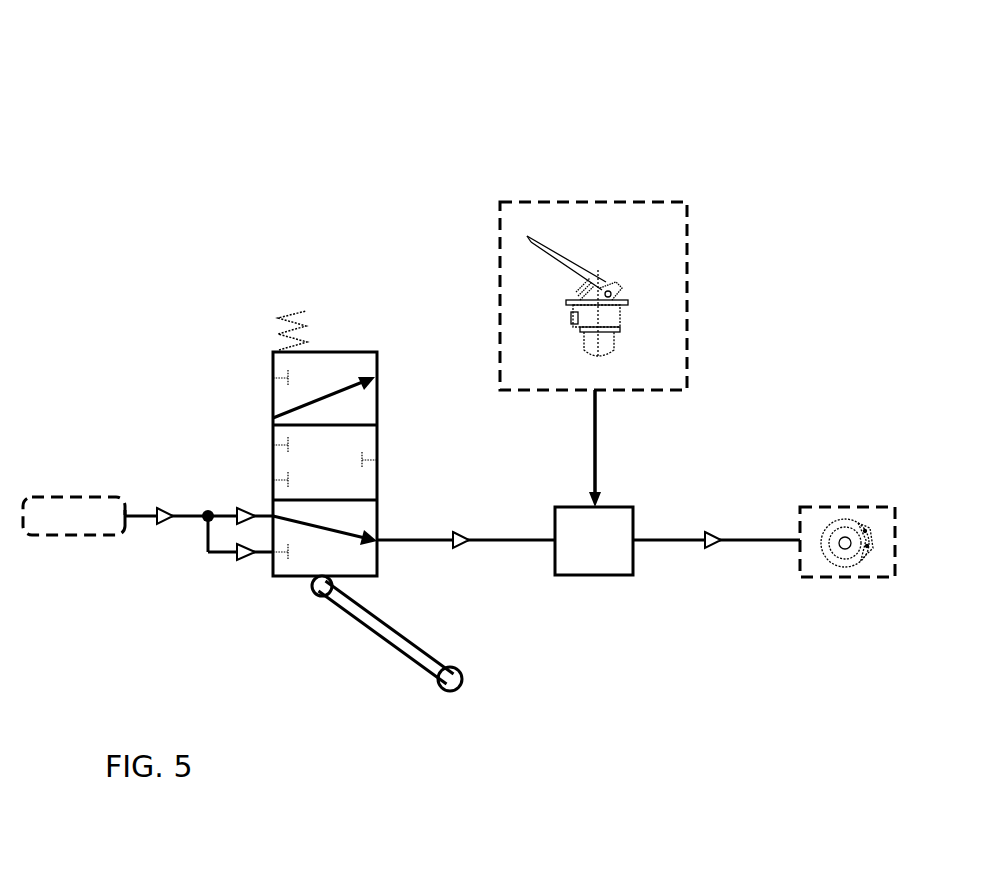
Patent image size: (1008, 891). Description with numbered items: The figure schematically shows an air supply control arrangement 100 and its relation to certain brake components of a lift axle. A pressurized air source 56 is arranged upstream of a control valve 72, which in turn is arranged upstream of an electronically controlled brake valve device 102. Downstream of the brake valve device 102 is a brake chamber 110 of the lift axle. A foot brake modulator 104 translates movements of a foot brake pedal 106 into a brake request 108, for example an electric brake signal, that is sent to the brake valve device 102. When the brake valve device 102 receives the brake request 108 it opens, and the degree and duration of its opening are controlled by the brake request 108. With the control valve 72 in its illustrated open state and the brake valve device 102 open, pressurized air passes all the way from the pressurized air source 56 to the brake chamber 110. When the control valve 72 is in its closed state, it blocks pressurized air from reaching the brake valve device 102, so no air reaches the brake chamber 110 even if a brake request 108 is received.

The air supply control arrangement 100 is at (230, 183).
The pressurized air source 56 is at (79, 497).
The control valve 72 is at (273, 396).
The electronically controlled brake valve device 102 is at (598, 576).
The foot brake modulator 104 is at (618, 332).
The foot brake pedal 106 is at (570, 255).
The brake request 108 is at (595, 437).
The brake chamber 110 is at (857, 507).